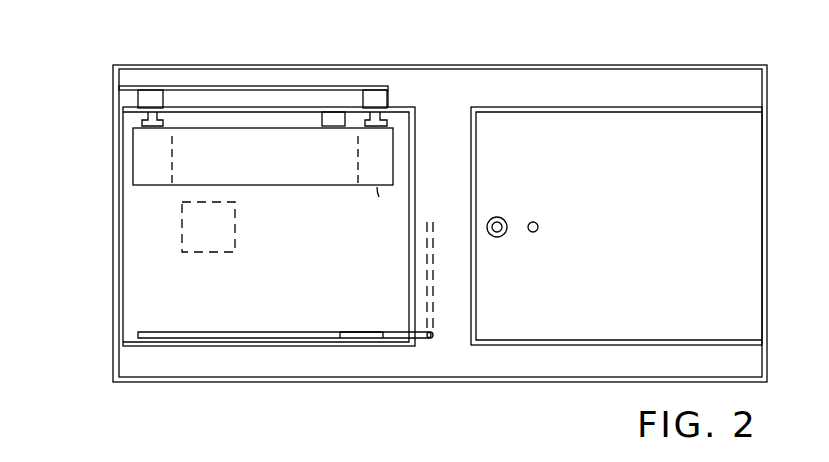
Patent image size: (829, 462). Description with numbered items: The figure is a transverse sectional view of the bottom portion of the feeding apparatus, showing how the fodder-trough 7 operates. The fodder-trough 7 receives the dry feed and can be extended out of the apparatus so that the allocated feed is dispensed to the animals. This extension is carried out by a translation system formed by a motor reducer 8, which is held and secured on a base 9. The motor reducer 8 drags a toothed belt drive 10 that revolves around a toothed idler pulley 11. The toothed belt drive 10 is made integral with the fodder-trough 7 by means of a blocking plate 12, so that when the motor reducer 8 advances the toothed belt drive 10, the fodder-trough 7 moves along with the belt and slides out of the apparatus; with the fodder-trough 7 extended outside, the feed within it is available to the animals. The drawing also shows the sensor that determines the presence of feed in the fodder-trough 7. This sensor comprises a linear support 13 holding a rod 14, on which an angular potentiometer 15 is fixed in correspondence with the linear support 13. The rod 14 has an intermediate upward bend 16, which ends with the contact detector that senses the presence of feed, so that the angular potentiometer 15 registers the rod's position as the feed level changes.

The fodder-trough 7 is at (413, 128).
The motor reducer 8 is at (147, 167).
The base 9 is at (148, 117).
The toothed belt drive 10 is at (262, 110).
The toothed idler pulley 11 is at (377, 97).
The blocking plate 12 is at (337, 117).
The linear support 13 is at (433, 265).
The rod 14 is at (163, 333).
The angular potentiometer 15 is at (428, 340).
The intermediate upward bend 16 is at (363, 335).